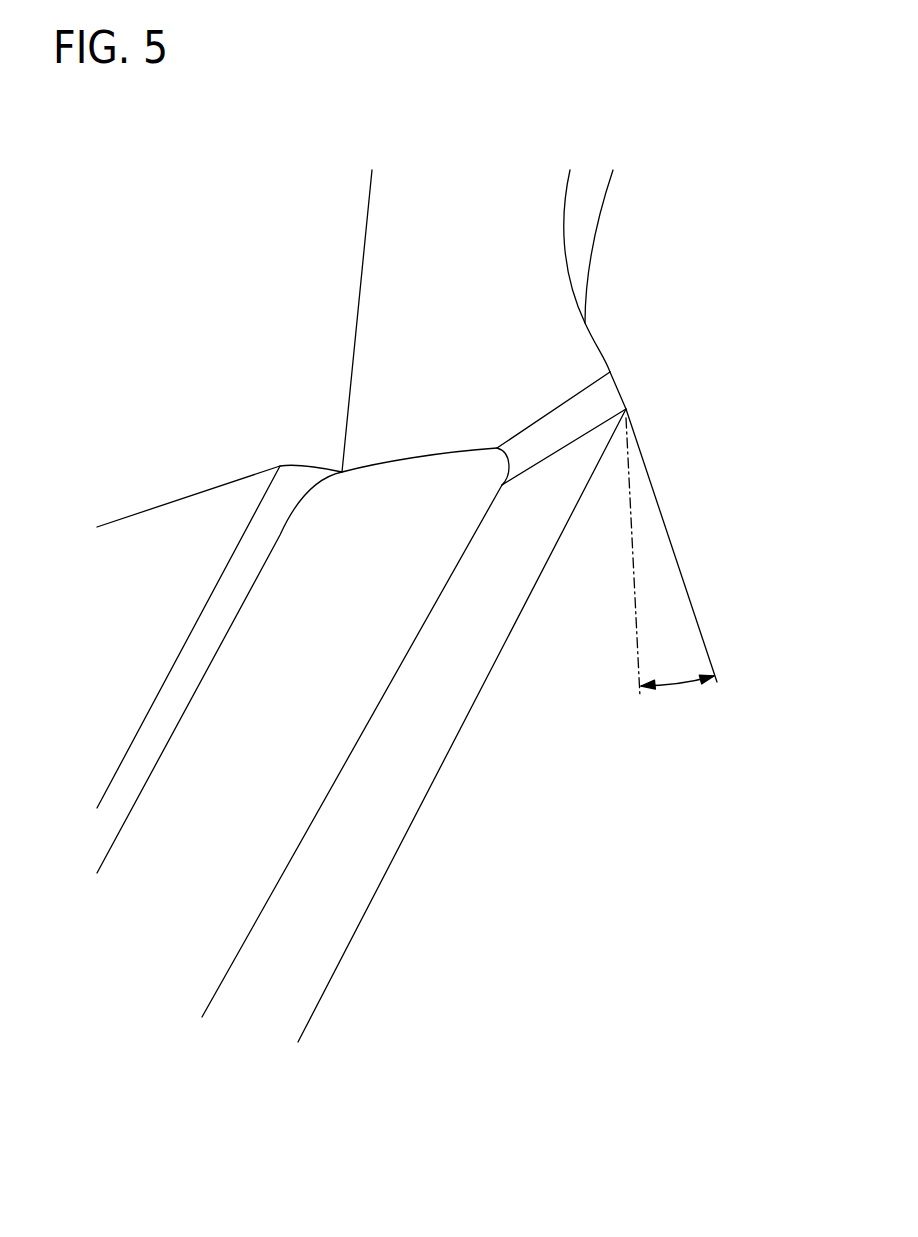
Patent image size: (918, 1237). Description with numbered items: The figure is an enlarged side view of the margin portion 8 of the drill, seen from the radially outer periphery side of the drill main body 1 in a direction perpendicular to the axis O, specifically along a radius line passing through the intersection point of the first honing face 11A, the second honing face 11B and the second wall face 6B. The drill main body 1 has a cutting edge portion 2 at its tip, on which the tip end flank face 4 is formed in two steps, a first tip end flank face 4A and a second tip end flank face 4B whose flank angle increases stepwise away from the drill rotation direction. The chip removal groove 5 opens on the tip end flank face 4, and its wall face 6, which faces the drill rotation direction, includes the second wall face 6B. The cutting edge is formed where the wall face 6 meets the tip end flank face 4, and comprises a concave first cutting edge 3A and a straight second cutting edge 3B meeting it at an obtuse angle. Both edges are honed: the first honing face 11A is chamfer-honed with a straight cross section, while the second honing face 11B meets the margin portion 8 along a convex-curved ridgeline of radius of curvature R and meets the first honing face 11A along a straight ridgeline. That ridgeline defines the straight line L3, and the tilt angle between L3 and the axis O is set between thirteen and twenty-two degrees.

The drill main body 1 is at (435, 558).
The cutting edge portion 2 is at (435, 558).
The first cutting edge 3A is at (588, 201).
The second cutting edge 3B is at (532, 432).
The tip end flank face 4 is at (365, 273).
The first tip end flank face 4A is at (364, 297).
The second tip end flank face 4B is at (343, 297).
The chip removal groove 5 is at (482, 810).
The wall face 6 is at (414, 725).
The second wall face 6B is at (414, 725).
The margin portion 8 is at (361, 725).
The first honing face 11A is at (573, 242).
The second honing face 11B is at (554, 399).
The radius of curvature R is at (492, 462).
The axis O is at (638, 648).
The straight line L3 is at (703, 627).